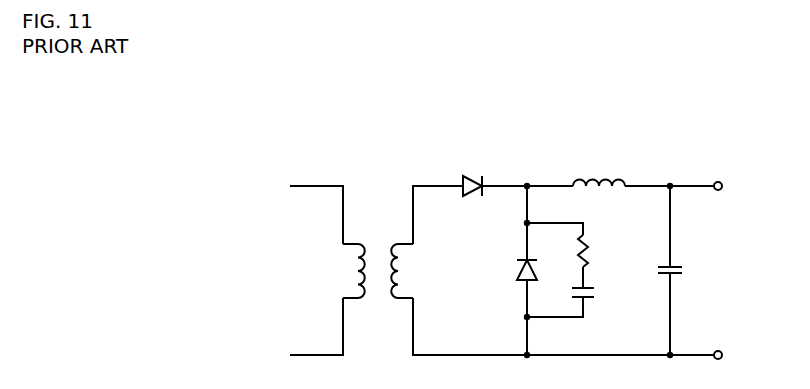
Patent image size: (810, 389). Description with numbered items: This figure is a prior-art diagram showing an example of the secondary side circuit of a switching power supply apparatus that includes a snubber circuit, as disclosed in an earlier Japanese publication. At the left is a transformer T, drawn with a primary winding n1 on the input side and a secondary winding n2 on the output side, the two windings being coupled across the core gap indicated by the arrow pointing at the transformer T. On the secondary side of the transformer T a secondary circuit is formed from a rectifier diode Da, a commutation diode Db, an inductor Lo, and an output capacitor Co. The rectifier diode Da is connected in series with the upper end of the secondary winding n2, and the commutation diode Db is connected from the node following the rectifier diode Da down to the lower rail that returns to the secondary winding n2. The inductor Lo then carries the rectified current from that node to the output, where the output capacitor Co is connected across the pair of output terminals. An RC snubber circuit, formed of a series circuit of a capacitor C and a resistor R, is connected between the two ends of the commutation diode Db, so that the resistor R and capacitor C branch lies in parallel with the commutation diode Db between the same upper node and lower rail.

The transformer T is at (376, 209).
The primary winding n1 is at (344, 271).
The secondary winding n2 is at (413, 271).
The rectifier diode Da is at (473, 171).
The commutation diode Db is at (511, 270).
The resistor R is at (595, 251).
The capacitor C is at (592, 292).
The inductor Lo is at (599, 170).
The output capacitor Co is at (684, 270).